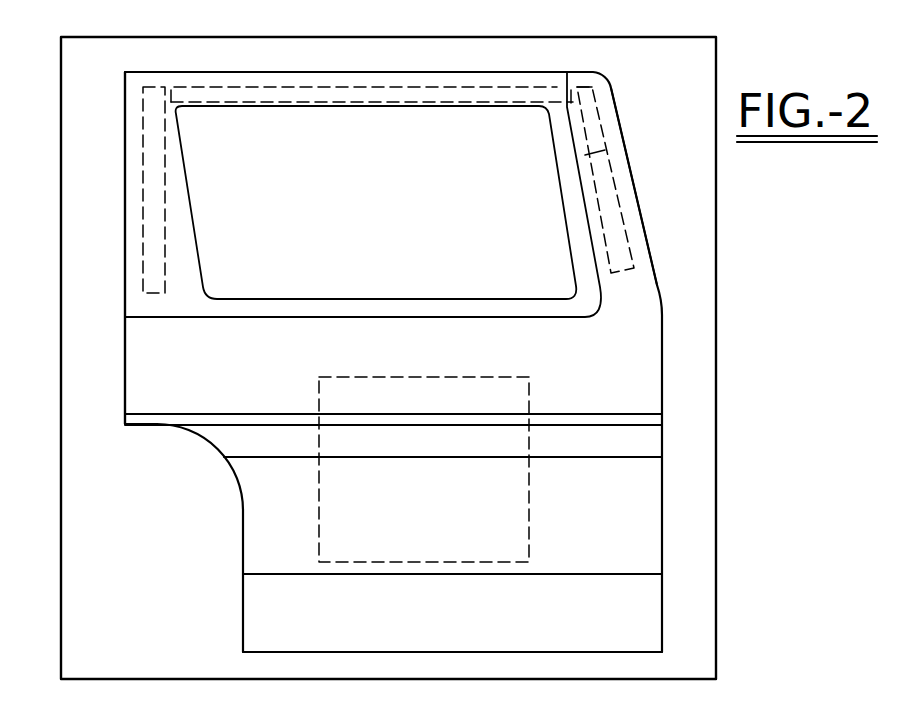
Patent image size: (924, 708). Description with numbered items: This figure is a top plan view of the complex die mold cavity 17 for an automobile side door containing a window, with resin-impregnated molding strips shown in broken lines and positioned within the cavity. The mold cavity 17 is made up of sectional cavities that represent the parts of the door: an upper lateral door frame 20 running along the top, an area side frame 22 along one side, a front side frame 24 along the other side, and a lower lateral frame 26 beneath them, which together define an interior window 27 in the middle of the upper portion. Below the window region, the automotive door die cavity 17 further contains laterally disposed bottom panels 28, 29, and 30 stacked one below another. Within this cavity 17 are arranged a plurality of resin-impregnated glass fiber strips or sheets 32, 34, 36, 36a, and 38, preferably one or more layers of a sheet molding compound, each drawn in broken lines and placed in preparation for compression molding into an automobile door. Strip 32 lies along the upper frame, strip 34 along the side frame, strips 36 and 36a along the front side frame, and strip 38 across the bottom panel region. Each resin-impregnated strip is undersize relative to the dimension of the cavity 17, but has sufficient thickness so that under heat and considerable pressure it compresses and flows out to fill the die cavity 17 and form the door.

The mold cavity 17 is at (716, 318).
The upper lateral door frame 20 is at (380, 82).
The area side frame 22 is at (133, 210).
The front side frame 24 is at (642, 252).
The lower lateral frame 26 is at (137, 368).
The interior window 27 is at (308, 133).
The bottom panel 28 is at (650, 440).
The bottom panel 29 is at (650, 515).
The bottom panel 30 is at (650, 603).
The resin-impregnated glass fiber strip 32 is at (243, 95).
The resin-impregnated glass fiber strip 34 is at (152, 152).
The resin-impregnated glass fiber strip 36 is at (613, 215).
The resin-impregnated glass fiber strip 36a is at (608, 110).
The resin-impregnated glass fiber strip 38 is at (520, 393).